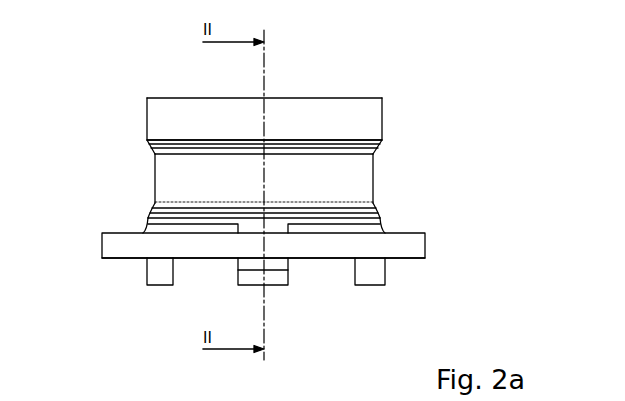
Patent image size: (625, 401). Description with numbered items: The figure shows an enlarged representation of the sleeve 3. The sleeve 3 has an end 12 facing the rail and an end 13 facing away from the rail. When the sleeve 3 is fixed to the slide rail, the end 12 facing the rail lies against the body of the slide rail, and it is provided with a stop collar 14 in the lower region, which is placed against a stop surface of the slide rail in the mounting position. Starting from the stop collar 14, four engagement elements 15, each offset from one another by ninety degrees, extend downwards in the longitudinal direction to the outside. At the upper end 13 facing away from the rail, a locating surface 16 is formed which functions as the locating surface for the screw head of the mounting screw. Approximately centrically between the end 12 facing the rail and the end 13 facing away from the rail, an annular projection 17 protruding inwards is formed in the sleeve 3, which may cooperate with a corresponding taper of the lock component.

The sleeve 3 is at (104, 113).
The end facing the rail 12 is at (435, 248).
The end facing away from the rail 13 is at (392, 102).
The stop collar 14 is at (410, 259).
The engagement elements 15 is at (160, 283).
The locating surface 16 is at (358, 98).
The annular projection 17 is at (362, 172).